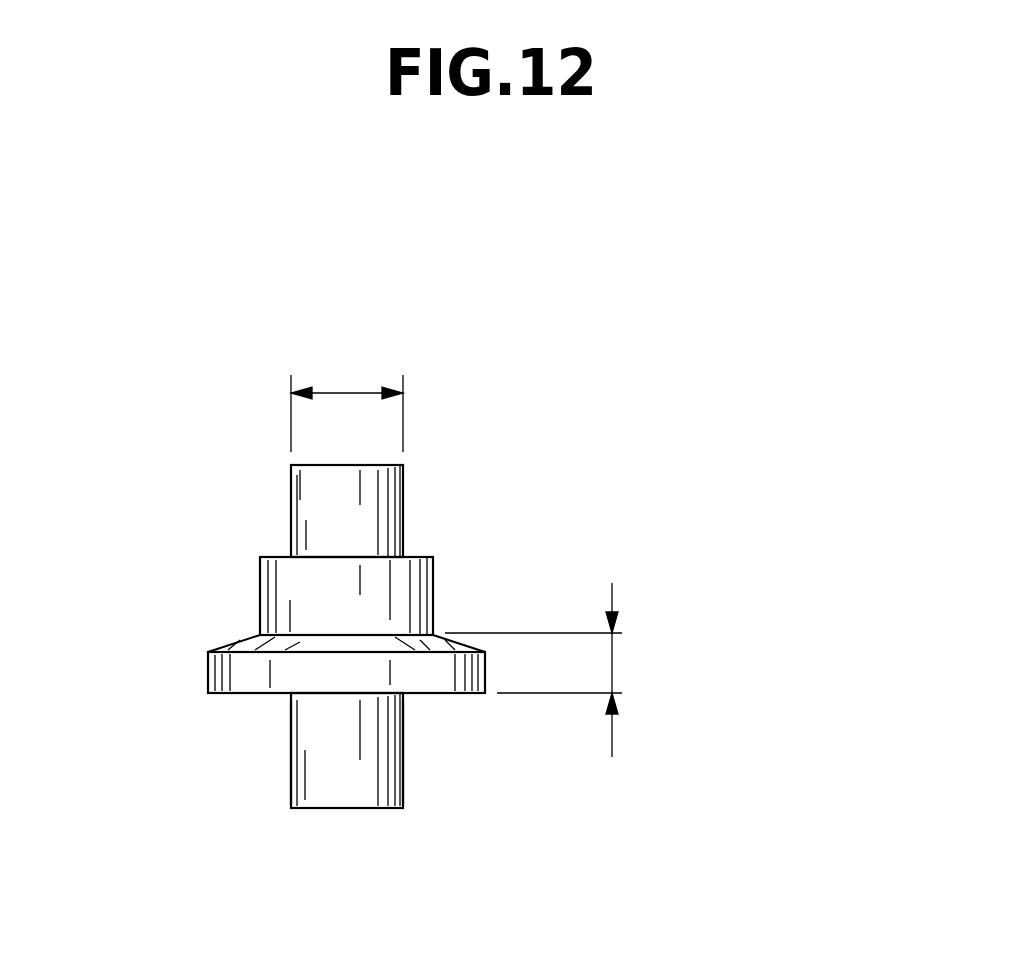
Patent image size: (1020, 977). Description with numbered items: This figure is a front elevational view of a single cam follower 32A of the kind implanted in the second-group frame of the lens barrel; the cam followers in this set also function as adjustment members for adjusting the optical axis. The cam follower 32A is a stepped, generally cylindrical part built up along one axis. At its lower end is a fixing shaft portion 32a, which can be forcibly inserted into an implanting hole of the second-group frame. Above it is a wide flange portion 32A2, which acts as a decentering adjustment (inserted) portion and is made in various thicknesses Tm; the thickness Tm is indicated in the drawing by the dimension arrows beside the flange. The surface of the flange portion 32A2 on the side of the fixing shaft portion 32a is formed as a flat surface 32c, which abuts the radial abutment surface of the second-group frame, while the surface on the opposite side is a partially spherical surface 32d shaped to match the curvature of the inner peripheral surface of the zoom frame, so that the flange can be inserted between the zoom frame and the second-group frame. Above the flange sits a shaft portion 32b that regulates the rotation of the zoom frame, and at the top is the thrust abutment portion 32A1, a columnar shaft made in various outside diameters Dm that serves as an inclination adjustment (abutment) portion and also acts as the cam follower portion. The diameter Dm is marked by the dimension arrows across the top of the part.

The cam follower 32A is at (160, 796).
The thrust abutment portion 32A1 is at (403, 490).
The flange portion 32A2 is at (487, 682).
The fixing shaft portion 32a is at (288, 765).
The shaft portion 32b is at (434, 580).
The flat surface 32c is at (225, 695).
The partially spherical surface 32d is at (473, 652).
The outside diameter Dm is at (350, 392).
The thickness Tm is at (615, 668).